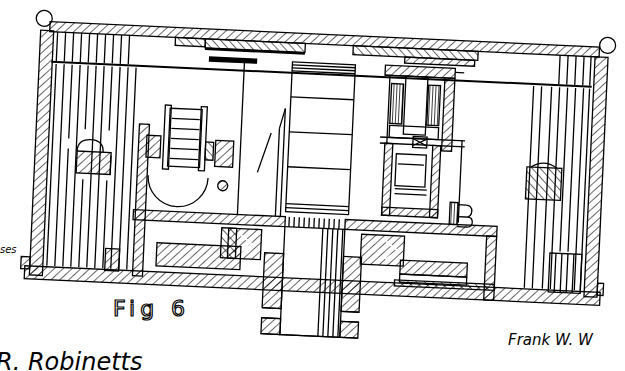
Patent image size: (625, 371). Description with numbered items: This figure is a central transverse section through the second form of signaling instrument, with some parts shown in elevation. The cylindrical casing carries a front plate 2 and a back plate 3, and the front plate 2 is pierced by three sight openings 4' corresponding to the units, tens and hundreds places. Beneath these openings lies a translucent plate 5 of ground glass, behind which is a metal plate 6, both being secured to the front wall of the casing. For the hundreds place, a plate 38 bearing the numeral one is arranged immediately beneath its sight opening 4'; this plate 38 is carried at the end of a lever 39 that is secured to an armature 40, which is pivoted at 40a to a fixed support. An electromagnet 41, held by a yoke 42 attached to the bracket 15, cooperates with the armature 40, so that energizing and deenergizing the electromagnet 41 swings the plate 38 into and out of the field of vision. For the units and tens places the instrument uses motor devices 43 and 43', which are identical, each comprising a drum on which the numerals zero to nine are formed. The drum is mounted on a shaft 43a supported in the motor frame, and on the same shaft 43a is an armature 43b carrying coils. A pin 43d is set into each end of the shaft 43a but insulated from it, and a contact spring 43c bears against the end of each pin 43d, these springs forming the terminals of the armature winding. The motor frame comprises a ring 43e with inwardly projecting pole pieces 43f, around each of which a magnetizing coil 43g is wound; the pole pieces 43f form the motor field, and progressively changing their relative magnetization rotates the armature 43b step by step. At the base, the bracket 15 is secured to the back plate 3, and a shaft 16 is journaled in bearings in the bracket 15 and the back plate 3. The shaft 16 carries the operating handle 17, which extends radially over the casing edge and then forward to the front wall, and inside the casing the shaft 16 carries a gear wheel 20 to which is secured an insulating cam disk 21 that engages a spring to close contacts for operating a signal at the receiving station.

The front plate 2 is at (104, 34).
The back plate 3 is at (100, 292).
The plate 5 is at (214, 44).
The sight openings 4' is at (370, 36).
The plate 6 is at (200, 46).
The plate 38 is at (225, 67).
The lever 39 is at (241, 101).
The armature 40 is at (214, 140).
The pivot 40a is at (224, 186).
The electromagnet 41 is at (180, 130).
The yoke 42 is at (177, 191).
The motor device 43 is at (434, 109).
The motor device 43' is at (331, 138).
The shaft 43a is at (446, 136).
The armature 43b is at (404, 128).
The contact spring 43c is at (463, 158).
The pin 43d is at (466, 138).
The ring 43e is at (455, 68).
The pole pieces 43f is at (395, 84).
The magnetizing coil 43g is at (452, 83).
The bracket 15 is at (500, 248).
The shaft 16 is at (314, 282).
The operating handle 17 is at (368, 306).
The gear wheel 20 is at (470, 284).
The cam disk 21 is at (414, 262).